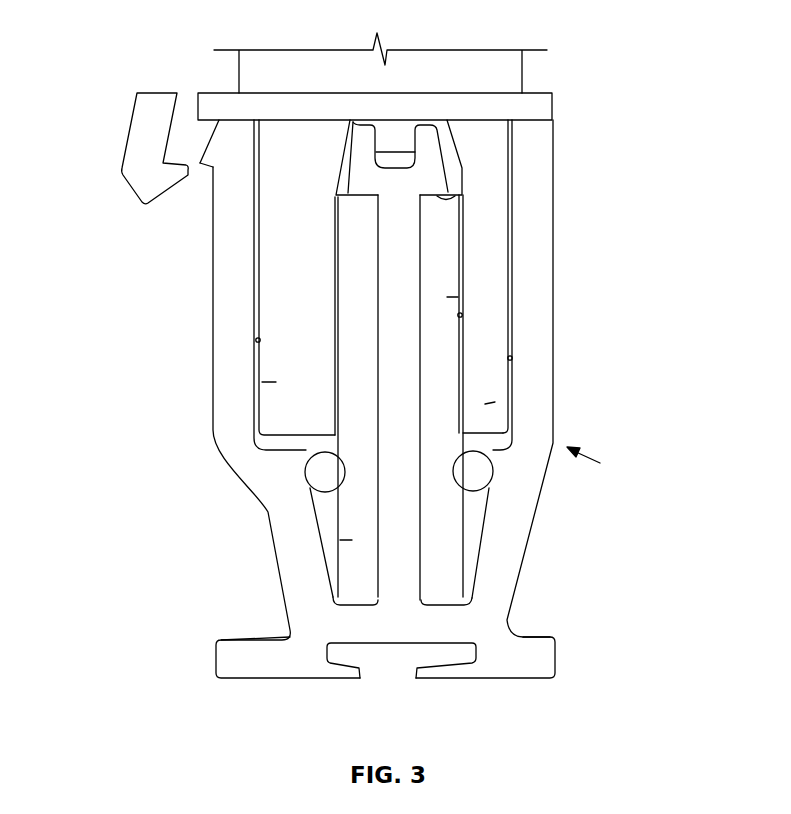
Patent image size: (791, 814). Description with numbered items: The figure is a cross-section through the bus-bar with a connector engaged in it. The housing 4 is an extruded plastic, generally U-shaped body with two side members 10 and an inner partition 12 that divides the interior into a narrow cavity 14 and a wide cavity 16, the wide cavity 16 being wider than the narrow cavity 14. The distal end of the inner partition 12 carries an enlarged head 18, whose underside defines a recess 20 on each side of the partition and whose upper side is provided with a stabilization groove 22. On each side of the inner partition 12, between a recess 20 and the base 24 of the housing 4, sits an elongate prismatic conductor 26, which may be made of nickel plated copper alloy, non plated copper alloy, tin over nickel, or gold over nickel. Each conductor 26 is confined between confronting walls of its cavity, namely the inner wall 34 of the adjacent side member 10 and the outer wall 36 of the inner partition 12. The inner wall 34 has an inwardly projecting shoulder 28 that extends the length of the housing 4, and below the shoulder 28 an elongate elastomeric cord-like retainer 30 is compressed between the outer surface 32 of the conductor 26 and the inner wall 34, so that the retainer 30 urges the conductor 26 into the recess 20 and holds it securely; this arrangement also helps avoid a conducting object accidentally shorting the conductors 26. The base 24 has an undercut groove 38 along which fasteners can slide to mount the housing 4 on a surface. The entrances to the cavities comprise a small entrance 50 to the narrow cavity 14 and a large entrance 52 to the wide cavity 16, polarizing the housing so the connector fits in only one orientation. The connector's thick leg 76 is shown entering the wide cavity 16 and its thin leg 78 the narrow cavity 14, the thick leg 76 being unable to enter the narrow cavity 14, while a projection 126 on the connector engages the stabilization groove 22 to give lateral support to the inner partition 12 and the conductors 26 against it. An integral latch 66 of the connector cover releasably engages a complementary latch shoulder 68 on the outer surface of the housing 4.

The housing 4 is at (598, 463).
The side member 10 is at (225, 420).
The inner partition 12 is at (393, 387).
The narrow cavity 14 is at (465, 352).
The wide cavity 16 is at (332, 330).
The enlarged head 18 is at (363, 140).
The recess 20 is at (343, 215).
The stabilization groove 22 is at (402, 153).
The base 24 is at (490, 622).
The conductor 26 is at (347, 540).
The shoulder 28 is at (310, 452).
The retainer 30 is at (310, 485).
The outer surface 32 is at (312, 450).
The inner wall 34 is at (256, 340).
The outer wall 36 is at (378, 557).
The undercut groove 38 is at (388, 660).
The small entrance 50 is at (490, 235).
The large entrance 52 is at (288, 130).
The latch 66 is at (135, 133).
The latch shoulder 68 is at (200, 167).
The thick leg 76 is at (265, 382).
The thin leg 78 is at (490, 403).
The projection 126 is at (397, 133).